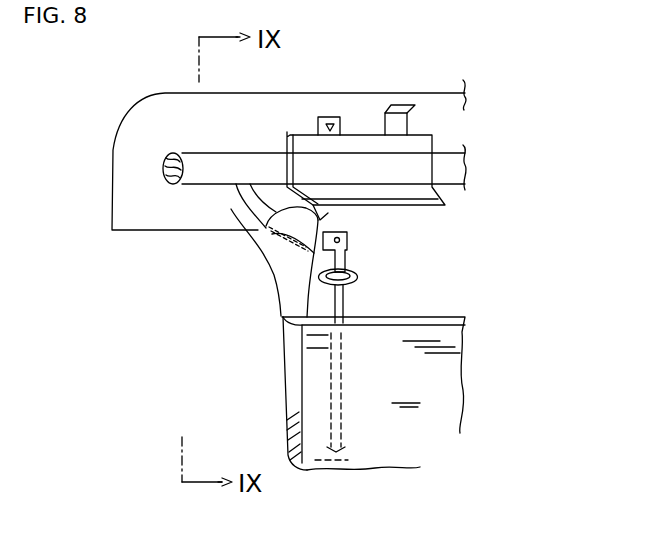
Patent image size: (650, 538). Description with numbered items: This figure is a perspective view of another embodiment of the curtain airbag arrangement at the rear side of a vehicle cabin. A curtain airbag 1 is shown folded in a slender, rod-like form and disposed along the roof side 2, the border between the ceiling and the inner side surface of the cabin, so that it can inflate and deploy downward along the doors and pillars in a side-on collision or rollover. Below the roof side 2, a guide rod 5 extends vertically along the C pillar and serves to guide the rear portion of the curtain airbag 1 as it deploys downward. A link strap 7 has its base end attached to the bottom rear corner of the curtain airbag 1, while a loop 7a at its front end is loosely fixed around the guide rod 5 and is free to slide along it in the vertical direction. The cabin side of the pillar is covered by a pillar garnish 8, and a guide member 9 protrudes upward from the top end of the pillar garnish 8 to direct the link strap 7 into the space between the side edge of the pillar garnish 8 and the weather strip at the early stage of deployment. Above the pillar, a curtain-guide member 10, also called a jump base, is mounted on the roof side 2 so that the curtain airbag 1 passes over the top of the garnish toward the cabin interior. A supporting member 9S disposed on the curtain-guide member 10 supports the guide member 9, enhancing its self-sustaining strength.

The curtain airbag 1 is at (208, 167).
The roof side 2 is at (150, 130).
The guide rod 5 is at (347, 303).
The link strap 7 is at (233, 207).
The loop 7a is at (350, 268).
The pillar garnish 8 is at (443, 367).
The guide member 9 is at (298, 262).
The supporting member 9S is at (330, 217).
The curtain-guide member 10 is at (437, 190).